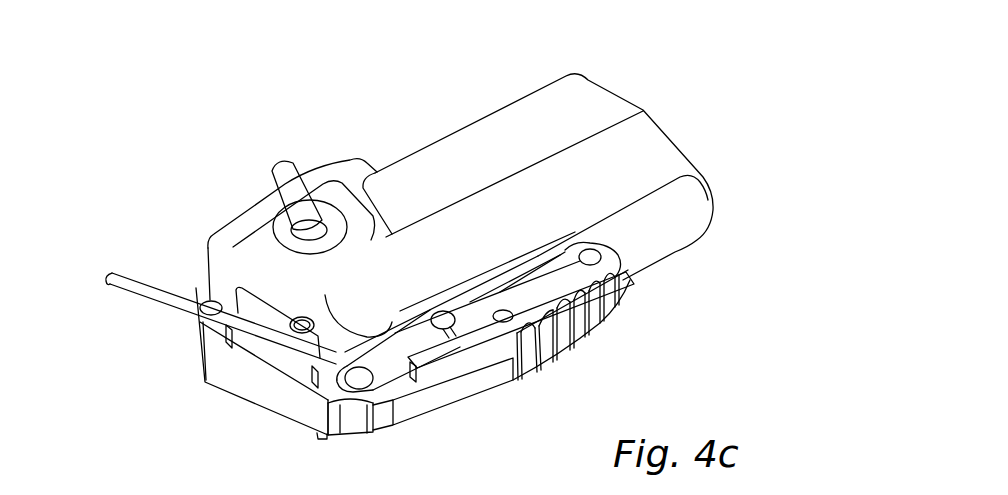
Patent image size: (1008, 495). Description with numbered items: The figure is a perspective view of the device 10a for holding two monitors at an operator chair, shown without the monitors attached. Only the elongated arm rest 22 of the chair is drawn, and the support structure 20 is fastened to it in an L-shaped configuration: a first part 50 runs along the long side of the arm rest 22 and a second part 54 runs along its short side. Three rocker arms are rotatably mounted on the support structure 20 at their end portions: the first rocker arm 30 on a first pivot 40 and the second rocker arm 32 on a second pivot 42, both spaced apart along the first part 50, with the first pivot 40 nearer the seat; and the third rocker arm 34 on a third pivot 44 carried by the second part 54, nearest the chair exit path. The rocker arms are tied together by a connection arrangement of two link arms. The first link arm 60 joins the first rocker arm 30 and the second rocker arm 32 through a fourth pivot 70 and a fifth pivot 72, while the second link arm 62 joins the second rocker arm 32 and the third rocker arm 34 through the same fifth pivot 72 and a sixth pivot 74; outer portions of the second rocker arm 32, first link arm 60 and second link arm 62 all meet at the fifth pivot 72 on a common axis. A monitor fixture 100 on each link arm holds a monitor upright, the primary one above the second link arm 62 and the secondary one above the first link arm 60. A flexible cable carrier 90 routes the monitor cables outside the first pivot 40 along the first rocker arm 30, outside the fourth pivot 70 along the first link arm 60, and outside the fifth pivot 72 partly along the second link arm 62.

The device 10a is at (164, 166).
The support structure 20 is at (640, 292).
The arm rest 22 is at (594, 100).
The first rocker arm 30 is at (552, 270).
The second rocker arm 32 is at (400, 347).
The third rocker arm 34 is at (287, 276).
The first pivot 40 is at (588, 255).
The second pivot 42 is at (443, 315).
The third pivot 44 is at (303, 320).
The first part 50 is at (518, 272).
The second part 54 is at (343, 310).
The first link arm 60 is at (433, 403).
The second link arm 62 is at (272, 367).
The fourth pivot 70 is at (498, 310).
The fifth pivot 72 is at (359, 375).
The sixth pivot 74 is at (202, 300).
The flexible cable carrier 90 is at (559, 340).
The monitor fixture 100 is at (147, 290).